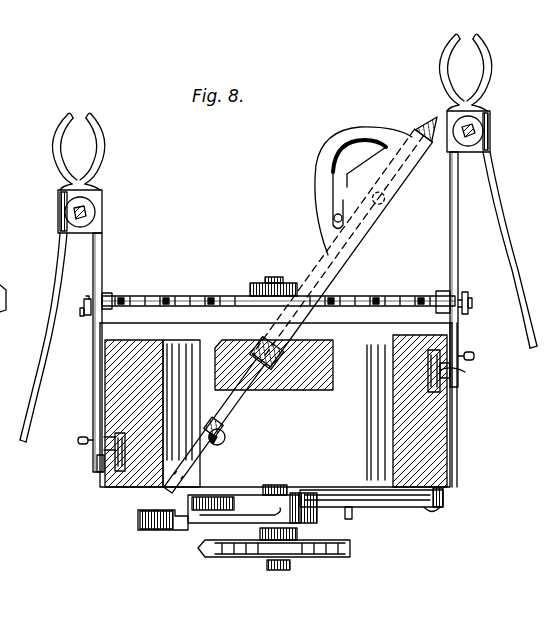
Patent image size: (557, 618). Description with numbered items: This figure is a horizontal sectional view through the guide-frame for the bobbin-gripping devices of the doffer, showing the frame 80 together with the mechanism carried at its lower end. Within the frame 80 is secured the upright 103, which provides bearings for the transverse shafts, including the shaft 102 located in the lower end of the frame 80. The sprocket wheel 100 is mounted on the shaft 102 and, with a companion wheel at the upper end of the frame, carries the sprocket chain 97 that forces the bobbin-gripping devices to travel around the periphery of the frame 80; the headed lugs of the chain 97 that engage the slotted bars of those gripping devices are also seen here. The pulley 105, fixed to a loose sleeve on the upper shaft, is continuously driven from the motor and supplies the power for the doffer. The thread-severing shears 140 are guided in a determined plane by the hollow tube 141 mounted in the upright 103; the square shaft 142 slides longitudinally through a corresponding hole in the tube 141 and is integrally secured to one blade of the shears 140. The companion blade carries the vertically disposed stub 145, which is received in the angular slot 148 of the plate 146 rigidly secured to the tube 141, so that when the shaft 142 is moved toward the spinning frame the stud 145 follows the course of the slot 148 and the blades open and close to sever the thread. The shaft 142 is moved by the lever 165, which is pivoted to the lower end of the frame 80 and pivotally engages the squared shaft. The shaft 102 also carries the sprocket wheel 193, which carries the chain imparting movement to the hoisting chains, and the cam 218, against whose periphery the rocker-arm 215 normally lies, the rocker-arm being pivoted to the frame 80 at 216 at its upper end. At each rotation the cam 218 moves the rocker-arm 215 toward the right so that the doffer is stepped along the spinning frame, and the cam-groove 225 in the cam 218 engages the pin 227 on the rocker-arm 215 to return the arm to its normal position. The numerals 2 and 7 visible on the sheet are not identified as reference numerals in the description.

The clamp assembly 2 is at (123, 550).
The base 7 is at (5, 342).
The frame 80 is at (155, 370).
The sprocket chain 97 is at (112, 298).
The sprocket wheel 100 is at (209, 297).
The shaft 102 is at (277, 281).
The upright 103 is at (327, 367).
The pulley 105 is at (2, 296).
The shears 140 is at (428, 127).
The hollow tube 141 is at (312, 323).
The shaft 142 is at (226, 404).
The stub 145 is at (334, 220).
The plate 146 is at (322, 190).
The angular slot 148 is at (352, 145).
The lever 165 is at (225, 436).
The sprocket wheel 193 is at (334, 558).
The rocker-arm 215 is at (393, 505).
The pivot 216 is at (438, 513).
The cam 218 is at (226, 495).
The cam-groove 225 is at (183, 520).
The pin 227 is at (352, 516).